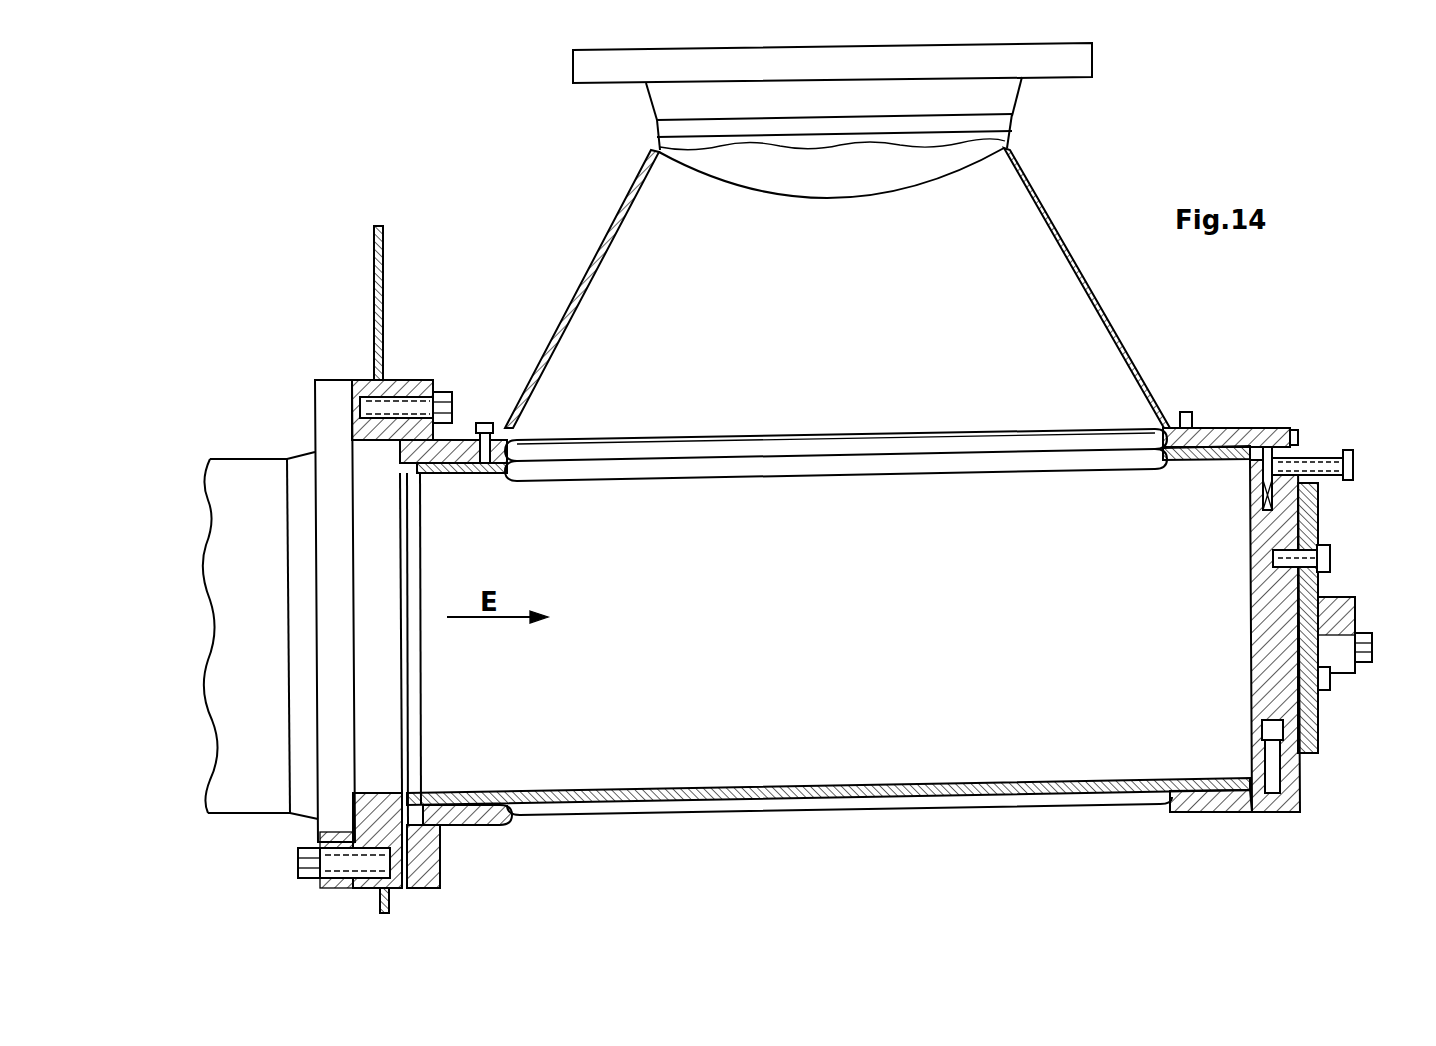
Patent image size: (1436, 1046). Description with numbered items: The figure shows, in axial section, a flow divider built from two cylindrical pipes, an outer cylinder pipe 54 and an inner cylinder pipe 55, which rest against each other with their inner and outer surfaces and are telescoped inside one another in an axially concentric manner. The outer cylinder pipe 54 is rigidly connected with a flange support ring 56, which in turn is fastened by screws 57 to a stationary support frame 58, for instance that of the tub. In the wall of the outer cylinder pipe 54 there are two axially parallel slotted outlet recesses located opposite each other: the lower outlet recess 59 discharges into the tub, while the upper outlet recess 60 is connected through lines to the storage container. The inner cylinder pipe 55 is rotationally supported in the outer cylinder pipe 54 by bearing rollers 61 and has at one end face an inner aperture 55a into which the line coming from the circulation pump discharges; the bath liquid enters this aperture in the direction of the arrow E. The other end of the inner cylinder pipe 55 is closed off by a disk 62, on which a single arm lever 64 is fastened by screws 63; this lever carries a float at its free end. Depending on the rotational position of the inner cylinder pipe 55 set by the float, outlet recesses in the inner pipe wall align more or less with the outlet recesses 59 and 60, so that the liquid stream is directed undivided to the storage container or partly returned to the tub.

The outer cylinder pipe 54 is at (1232, 428).
The inner cylinder pipe 55 is at (1205, 428).
The inner aperture 55a is at (383, 617).
The flange support ring 56 is at (650, 470).
The screws 57 is at (402, 392).
The stationary support frame 58 is at (384, 290).
The lower outlet recess 59 is at (725, 805).
The upper outlet recess 60 is at (583, 455).
The bearing rollers 61 is at (1222, 793).
The disk 62 is at (1275, 683).
The screws 63 is at (1332, 558).
The single arm lever 64 is at (1355, 600).